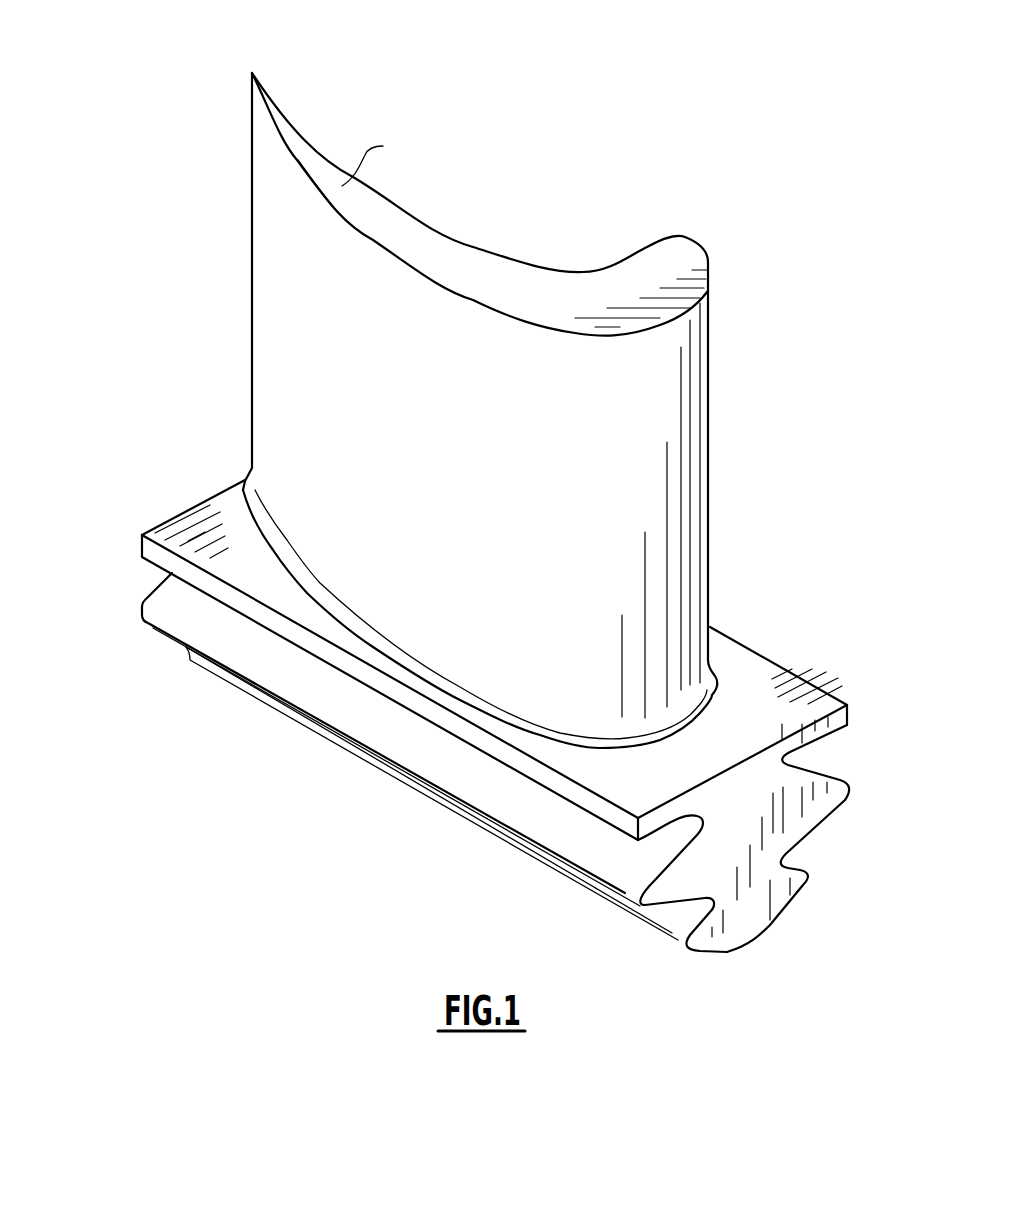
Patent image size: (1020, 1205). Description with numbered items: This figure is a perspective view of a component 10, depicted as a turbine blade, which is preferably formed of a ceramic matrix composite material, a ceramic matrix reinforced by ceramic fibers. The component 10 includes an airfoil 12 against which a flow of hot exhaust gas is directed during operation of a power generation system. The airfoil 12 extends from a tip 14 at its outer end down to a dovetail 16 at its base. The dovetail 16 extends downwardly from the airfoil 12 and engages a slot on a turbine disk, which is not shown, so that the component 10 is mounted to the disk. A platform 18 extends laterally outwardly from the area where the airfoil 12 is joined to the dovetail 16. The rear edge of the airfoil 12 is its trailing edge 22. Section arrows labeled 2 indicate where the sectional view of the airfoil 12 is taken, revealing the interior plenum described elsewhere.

The section line 2- 2 is at (825, 528).
The component 10 is at (469, 503).
The airfoil 12 is at (273, 218).
The tip 14 is at (377, 160).
The dovetail 16 is at (146, 596).
The platform 18 is at (197, 537).
The trailing edge 22 is at (210, 317).